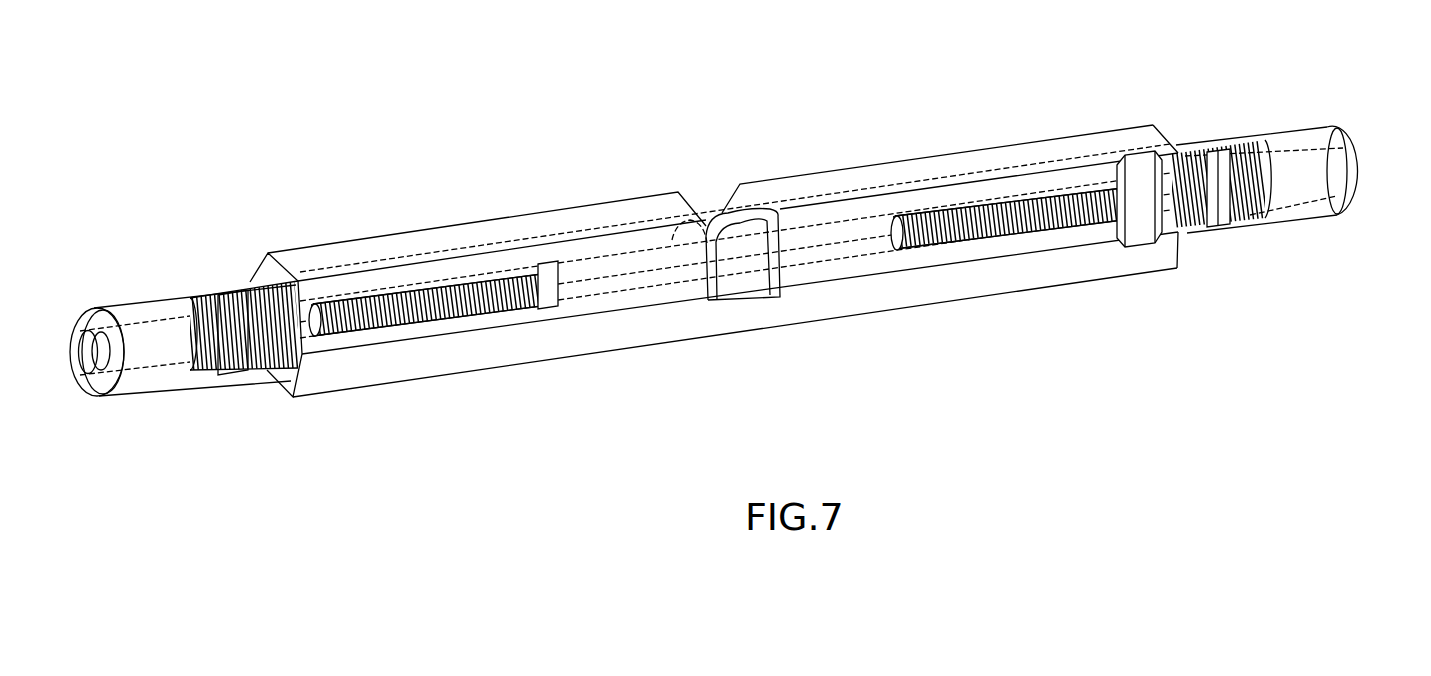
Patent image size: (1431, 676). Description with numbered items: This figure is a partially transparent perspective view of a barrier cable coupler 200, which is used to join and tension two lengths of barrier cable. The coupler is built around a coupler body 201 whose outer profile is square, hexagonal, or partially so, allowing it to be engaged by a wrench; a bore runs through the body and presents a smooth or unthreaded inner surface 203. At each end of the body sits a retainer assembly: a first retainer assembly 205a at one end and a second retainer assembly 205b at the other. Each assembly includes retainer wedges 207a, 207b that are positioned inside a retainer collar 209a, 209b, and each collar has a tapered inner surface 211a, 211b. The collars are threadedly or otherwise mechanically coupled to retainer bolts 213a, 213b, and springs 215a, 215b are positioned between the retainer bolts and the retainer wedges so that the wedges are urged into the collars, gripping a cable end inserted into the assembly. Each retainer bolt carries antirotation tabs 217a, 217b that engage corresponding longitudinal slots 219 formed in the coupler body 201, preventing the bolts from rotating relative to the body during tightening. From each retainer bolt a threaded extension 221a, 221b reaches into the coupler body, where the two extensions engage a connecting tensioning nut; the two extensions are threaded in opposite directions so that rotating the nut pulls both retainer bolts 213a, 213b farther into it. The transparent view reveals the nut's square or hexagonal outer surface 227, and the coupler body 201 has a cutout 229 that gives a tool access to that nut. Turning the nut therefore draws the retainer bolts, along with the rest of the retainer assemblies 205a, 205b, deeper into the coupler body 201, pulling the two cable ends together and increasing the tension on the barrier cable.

The barrier cable coupler 200 is at (727, 348).
The coupler body 201 is at (488, 218).
The inner surface 203 is at (407, 273).
The first retainer assembly 205a is at (166, 253).
The second retainer assembly 205b is at (1299, 241).
The retainer wedges 207a is at (170, 355).
The retainer wedges 207b is at (1283, 152).
The retainer collar 209a is at (127, 298).
The retainer collar 209b is at (1257, 233).
The tapered inner surface 211a is at (133, 368).
The tapered inner surface 211b is at (1320, 189).
The retainer bolt 213a is at (292, 397).
The retainer bolt 213b is at (1105, 230).
The spring 215a is at (212, 300).
The spring 215b is at (1220, 162).
The tabs 217a is at (317, 302).
The tabs 217b is at (1177, 268).
The longitudinal slots 219 is at (493, 318).
The threaded extension 221a is at (400, 290).
The threaded extension 221b is at (1013, 235).
The outer surface 227 is at (860, 255).
The cutout 229 is at (710, 198).